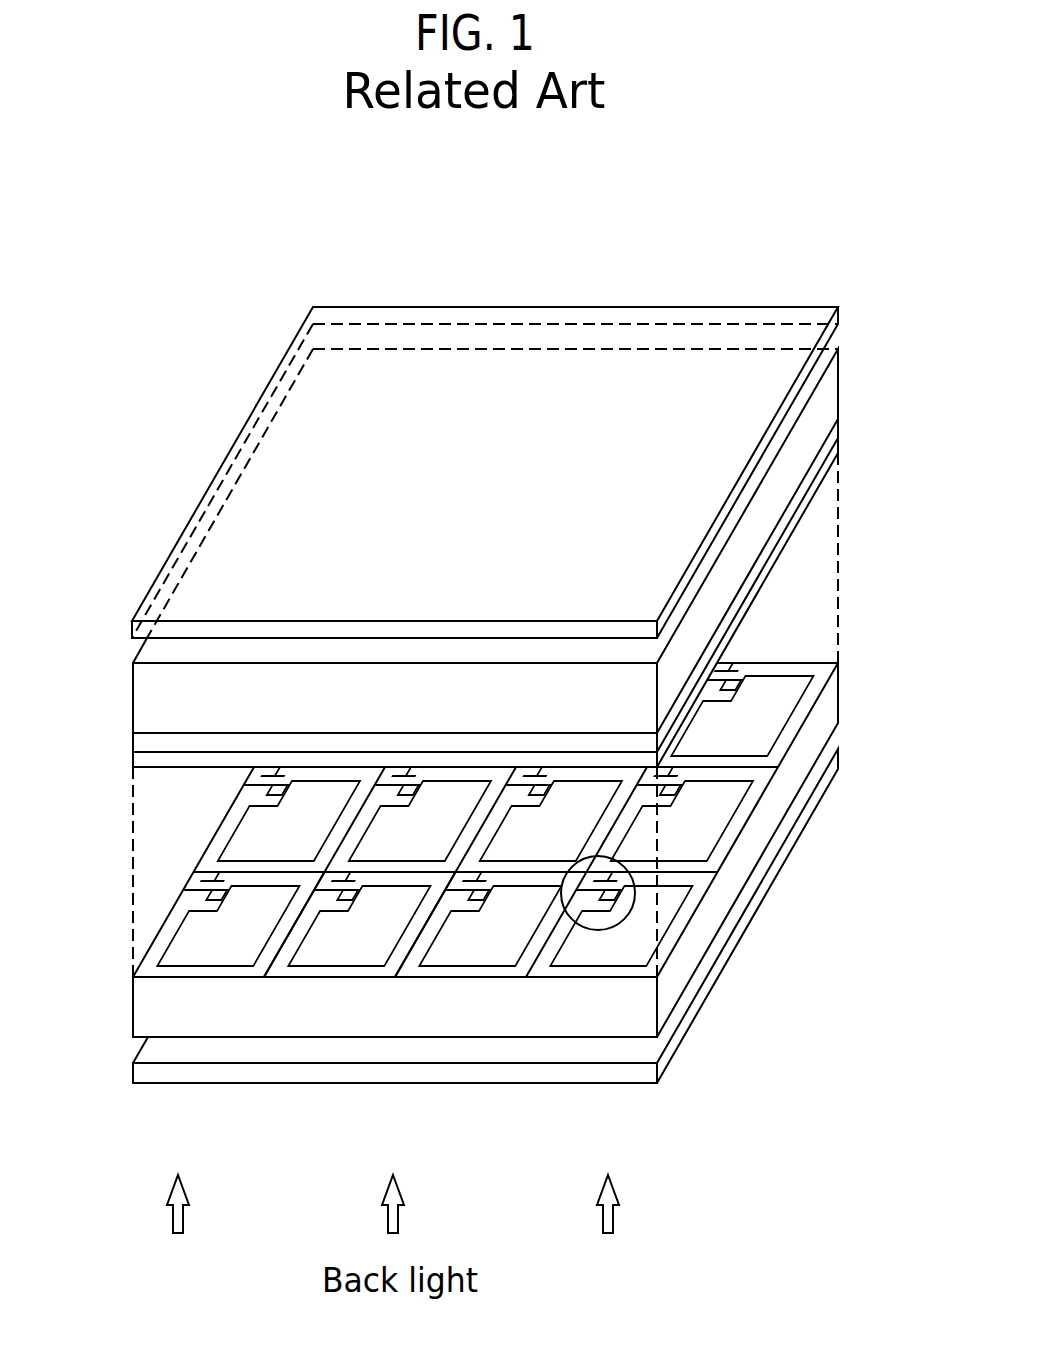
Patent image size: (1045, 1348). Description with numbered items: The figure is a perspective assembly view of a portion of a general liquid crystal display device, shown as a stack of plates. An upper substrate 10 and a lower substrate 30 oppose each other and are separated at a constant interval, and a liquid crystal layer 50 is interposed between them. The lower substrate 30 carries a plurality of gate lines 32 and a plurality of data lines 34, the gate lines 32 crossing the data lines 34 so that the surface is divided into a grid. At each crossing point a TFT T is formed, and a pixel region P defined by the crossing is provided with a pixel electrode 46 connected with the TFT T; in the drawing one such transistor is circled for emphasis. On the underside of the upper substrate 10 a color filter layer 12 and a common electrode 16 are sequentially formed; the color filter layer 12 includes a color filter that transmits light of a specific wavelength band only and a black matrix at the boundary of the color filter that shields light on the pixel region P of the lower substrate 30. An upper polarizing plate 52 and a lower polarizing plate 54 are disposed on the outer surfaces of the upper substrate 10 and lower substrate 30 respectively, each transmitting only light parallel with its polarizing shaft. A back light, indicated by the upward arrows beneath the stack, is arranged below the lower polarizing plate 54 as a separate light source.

The upper polarizing plate 52 is at (803, 308).
The upper substrate 10 is at (130, 663).
The color filter layer 12 is at (838, 430).
The common electrode 16 is at (838, 450).
The liquid crystal layer 50 is at (130, 767).
The lower substrate 30 is at (131, 977).
The lower polarizing plate 54 is at (777, 863).
The gate line 32 is at (513, 873).
The data line 34 is at (547, 937).
The pixel electrode 46 is at (678, 913).
The TFT T is at (600, 928).
The pixel region P is at (305, 977).